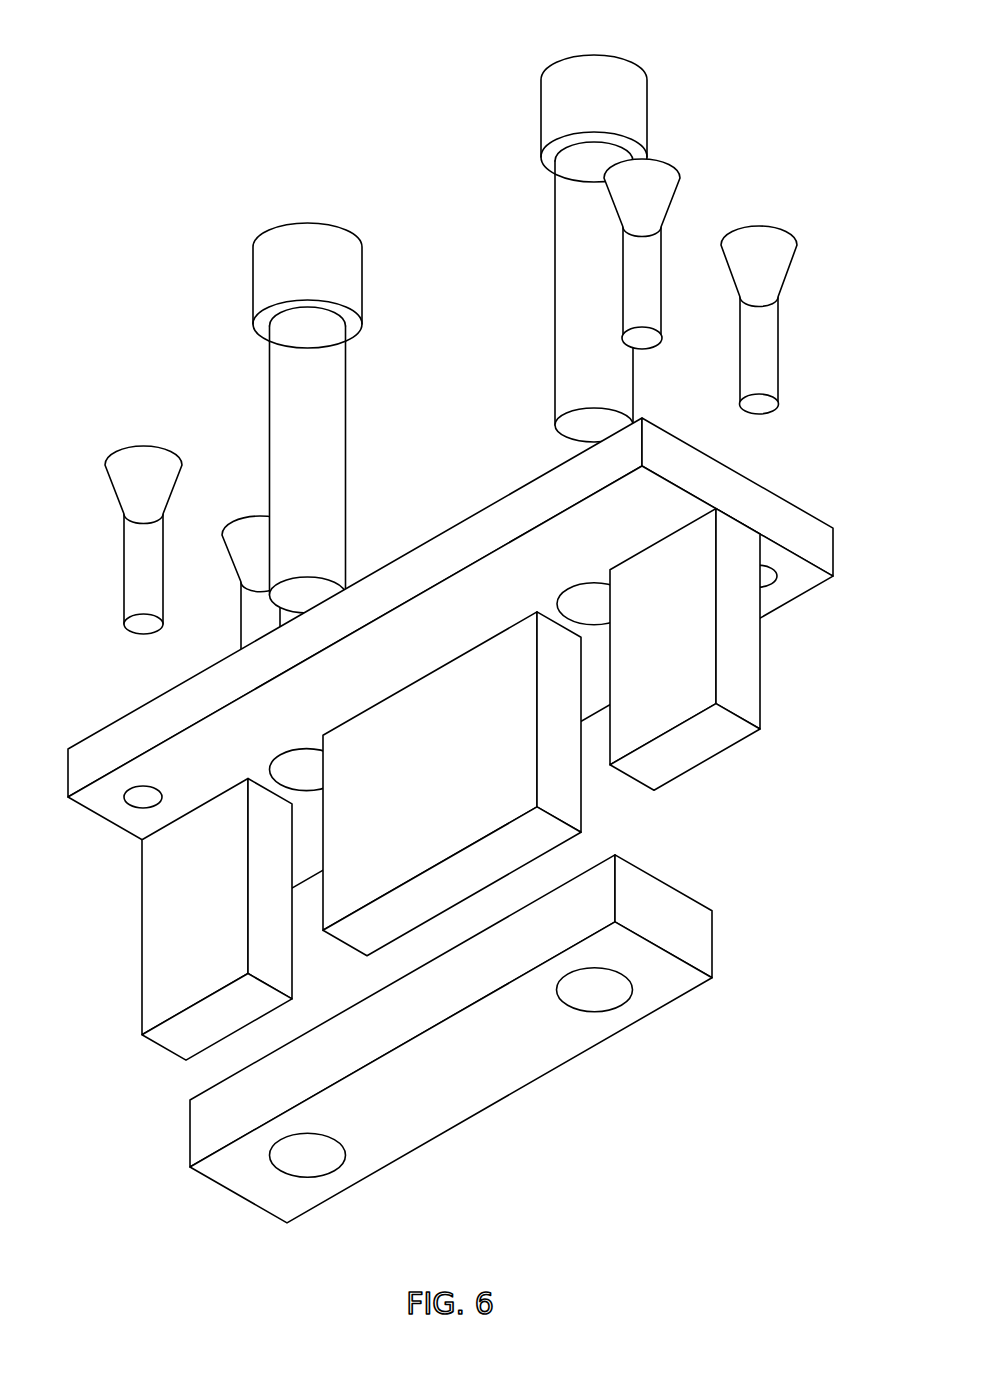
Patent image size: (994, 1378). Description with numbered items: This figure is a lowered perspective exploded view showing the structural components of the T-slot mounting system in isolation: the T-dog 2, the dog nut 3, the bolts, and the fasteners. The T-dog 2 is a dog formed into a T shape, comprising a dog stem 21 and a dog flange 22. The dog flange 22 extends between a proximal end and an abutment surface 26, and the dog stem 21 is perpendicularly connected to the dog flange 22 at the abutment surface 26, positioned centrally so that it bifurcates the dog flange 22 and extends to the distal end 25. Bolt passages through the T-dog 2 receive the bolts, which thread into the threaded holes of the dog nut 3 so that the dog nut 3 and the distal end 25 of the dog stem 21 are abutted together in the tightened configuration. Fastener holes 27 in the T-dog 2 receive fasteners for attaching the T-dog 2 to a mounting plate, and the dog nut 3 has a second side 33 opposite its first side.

The T-dog 2 is at (435, 752).
The dog stem 21 is at (184, 933).
The dog flange 22 is at (78, 773).
The distal end 25 is at (181, 1037).
The abutment surface 26 is at (105, 805).
The fastener hole 27 is at (145, 801).
The dog nut 3 is at (417, 1052).
The second side 33 is at (483, 1097).